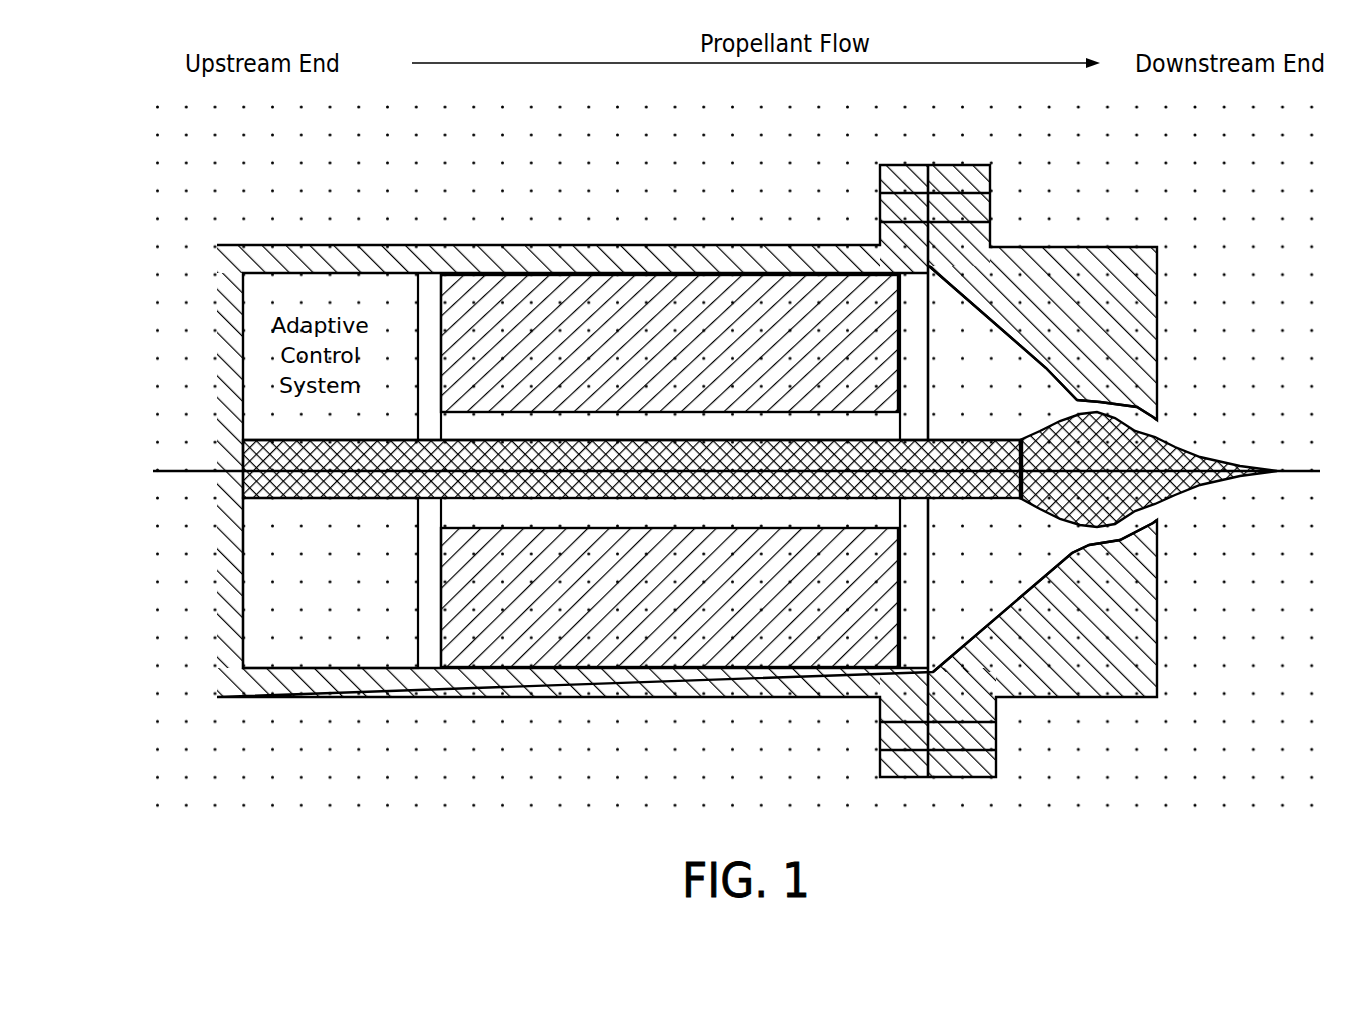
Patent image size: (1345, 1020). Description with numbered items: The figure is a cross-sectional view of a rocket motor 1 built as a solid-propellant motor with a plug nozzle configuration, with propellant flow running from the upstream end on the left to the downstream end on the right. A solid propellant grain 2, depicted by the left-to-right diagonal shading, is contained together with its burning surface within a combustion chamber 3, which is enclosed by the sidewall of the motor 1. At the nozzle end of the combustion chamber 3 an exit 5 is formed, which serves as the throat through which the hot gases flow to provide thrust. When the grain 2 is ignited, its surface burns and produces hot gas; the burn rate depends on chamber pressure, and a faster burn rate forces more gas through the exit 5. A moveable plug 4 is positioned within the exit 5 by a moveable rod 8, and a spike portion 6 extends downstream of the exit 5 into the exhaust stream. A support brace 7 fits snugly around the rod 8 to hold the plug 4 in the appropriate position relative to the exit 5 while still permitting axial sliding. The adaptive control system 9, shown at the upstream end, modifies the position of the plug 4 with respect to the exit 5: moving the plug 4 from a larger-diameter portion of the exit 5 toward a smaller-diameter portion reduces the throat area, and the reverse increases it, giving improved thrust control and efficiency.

The rocket motor 1 is at (500, 260).
The solid propellant grain 2 is at (590, 320).
The combustion chamber 3 is at (712, 432).
The moveable plug 4 is at (1050, 437).
The combustion chamber exit 5 is at (1103, 400).
The spike portion 6 is at (1190, 440).
The support brace 7 is at (845, 652).
The moveable rod 8 is at (668, 497).
The adaptive control system 9 is at (322, 530).